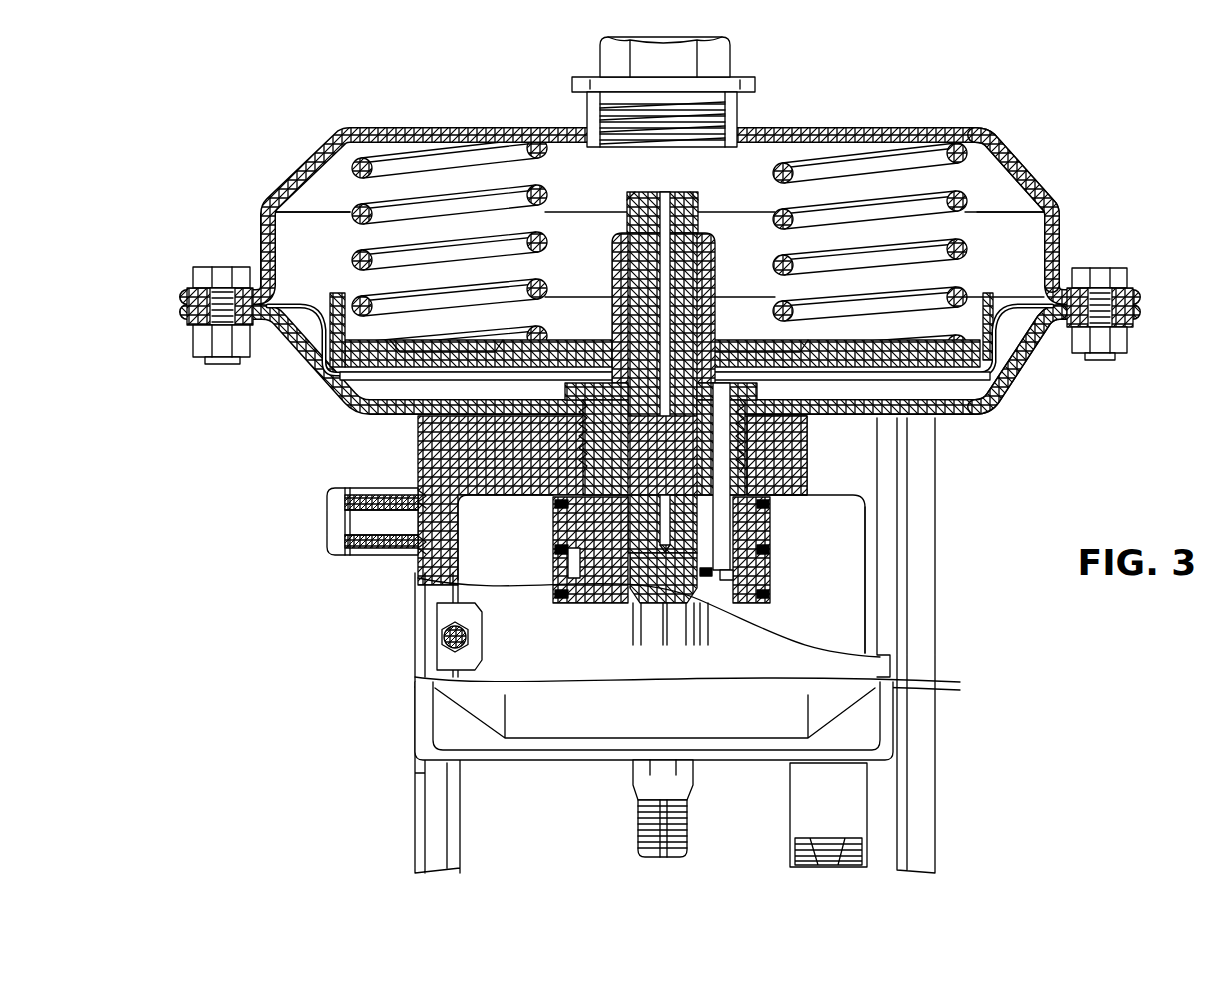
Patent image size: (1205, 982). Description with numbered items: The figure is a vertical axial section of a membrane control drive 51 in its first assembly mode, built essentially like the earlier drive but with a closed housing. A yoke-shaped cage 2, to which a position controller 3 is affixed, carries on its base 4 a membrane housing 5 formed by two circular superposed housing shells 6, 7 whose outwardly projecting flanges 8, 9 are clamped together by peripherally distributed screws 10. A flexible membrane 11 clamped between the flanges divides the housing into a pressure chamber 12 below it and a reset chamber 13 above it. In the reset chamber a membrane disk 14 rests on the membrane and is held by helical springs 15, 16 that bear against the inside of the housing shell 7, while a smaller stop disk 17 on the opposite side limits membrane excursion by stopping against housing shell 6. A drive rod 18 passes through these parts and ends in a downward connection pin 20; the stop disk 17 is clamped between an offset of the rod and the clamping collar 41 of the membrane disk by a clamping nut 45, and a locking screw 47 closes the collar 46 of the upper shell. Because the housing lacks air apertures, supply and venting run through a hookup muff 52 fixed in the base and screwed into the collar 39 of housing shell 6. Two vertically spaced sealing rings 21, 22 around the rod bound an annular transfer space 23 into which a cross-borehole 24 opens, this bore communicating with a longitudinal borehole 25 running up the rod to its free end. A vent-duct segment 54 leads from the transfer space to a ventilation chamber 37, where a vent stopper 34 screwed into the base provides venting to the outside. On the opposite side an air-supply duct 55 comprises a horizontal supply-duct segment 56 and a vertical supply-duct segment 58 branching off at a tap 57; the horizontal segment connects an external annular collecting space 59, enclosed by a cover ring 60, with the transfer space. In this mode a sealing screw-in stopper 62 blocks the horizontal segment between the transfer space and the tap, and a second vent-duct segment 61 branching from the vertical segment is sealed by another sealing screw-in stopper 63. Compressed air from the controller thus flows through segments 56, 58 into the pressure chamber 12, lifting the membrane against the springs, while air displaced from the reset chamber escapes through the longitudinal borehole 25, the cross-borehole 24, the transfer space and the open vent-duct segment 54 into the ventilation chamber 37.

The cage 2 is at (905, 636).
The position controller 3 is at (522, 735).
The base 4 is at (425, 428).
The membrane housing 5 is at (1003, 127).
The housing shell 6 is at (300, 375).
The housing shell 7 is at (378, 130).
The flange 8 is at (190, 320).
The flange 9 is at (190, 295).
The screw 10 is at (202, 350).
The membrane 11 is at (1010, 355).
The pressure chamber 12 is at (998, 408).
The reset chamber 13 is at (1000, 190).
The membrane disk 14 is at (988, 295).
The helical spring 15 is at (352, 218).
The helical spring 16 is at (888, 152).
The stop disk 17 is at (745, 390).
The drive rod 18 is at (630, 770).
The connection pin 20 is at (690, 830).
The sealing ring 21 is at (790, 462).
The sealing ring 22 is at (612, 603).
The annular transfer space 23 is at (565, 540).
The cross-borehole 24 is at (575, 560).
The longitudinal borehole 25 is at (668, 258).
The vent stopper 34 is at (345, 495).
The ventilation chamber 37 is at (848, 548).
The collar 39 is at (440, 445).
The clamping collar 41 is at (620, 240).
The clamping nut 45 is at (690, 205).
The collar 46 is at (585, 112).
The locking screw 47 is at (720, 60).
The membrane control drive 51 is at (327, 636).
The hookup muff 52 is at (560, 520).
The vent-duct segment 54 is at (598, 398).
The air-supply duct 55 is at (770, 580).
The horizontal supply-duct segment 56 is at (712, 592).
The tap 57 is at (740, 588).
The vertical supply-duct segment 58 is at (768, 545).
The annular collecting space 59 is at (560, 582).
The cover ring 60 is at (765, 592).
The second vent-duct segment 61 is at (760, 508).
The sealing screw-in stopper 62 is at (680, 610).
The sealing screw-in stopper 63 is at (860, 490).